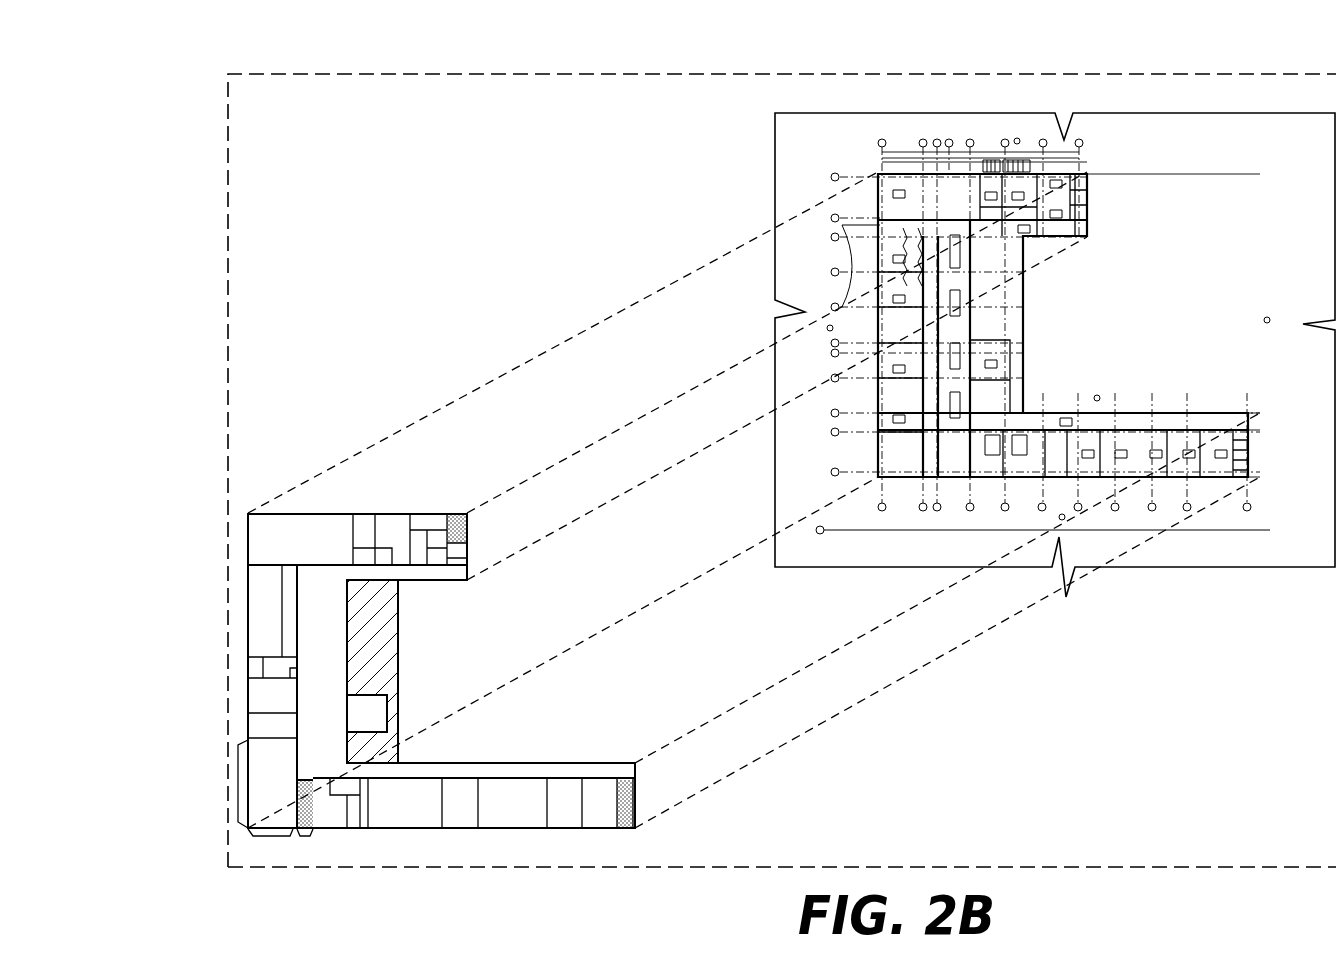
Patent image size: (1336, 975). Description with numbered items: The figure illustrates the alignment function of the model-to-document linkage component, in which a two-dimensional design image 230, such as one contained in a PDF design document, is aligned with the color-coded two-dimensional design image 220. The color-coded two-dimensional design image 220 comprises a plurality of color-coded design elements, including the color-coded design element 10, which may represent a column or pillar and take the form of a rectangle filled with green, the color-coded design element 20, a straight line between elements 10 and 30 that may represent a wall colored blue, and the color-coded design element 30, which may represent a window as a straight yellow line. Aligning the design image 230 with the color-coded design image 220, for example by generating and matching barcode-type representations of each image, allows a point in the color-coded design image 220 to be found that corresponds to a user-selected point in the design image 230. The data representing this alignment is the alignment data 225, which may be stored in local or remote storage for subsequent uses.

The alignment data 225 is at (757, 74).
The 2D design image 230 is at (1222, 113).
The color-coded 2D design element 30 is at (238, 787).
The color-coded 2D design element 20 is at (268, 836).
The color-coded 2D design element 10 is at (303, 836).
The color-coded 2D design image 220 is at (637, 830).